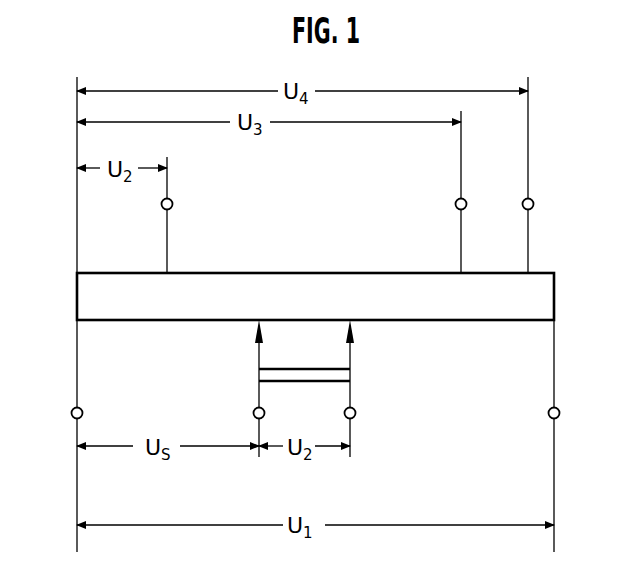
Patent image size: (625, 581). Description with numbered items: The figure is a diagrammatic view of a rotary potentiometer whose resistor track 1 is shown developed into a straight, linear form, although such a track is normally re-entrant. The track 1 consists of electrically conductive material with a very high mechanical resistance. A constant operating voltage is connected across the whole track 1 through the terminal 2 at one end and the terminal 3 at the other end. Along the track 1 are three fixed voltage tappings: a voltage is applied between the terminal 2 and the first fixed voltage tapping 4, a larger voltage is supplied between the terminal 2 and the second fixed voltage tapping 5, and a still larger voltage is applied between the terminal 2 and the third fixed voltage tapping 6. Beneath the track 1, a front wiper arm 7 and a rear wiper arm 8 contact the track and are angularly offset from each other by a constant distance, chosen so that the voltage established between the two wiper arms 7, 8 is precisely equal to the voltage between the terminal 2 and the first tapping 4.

The resistor track 1 is at (295, 281).
The terminal 2 is at (71, 412).
The terminal 3 is at (559, 412).
The first fixed voltage tapping 4 is at (172, 204).
The second fixed voltage tapping 5 is at (466, 204).
The third fixed voltage tapping 6 is at (533, 204).
The front wiper arm 7 is at (354, 340).
The rear wiper arm 8 is at (255, 340).